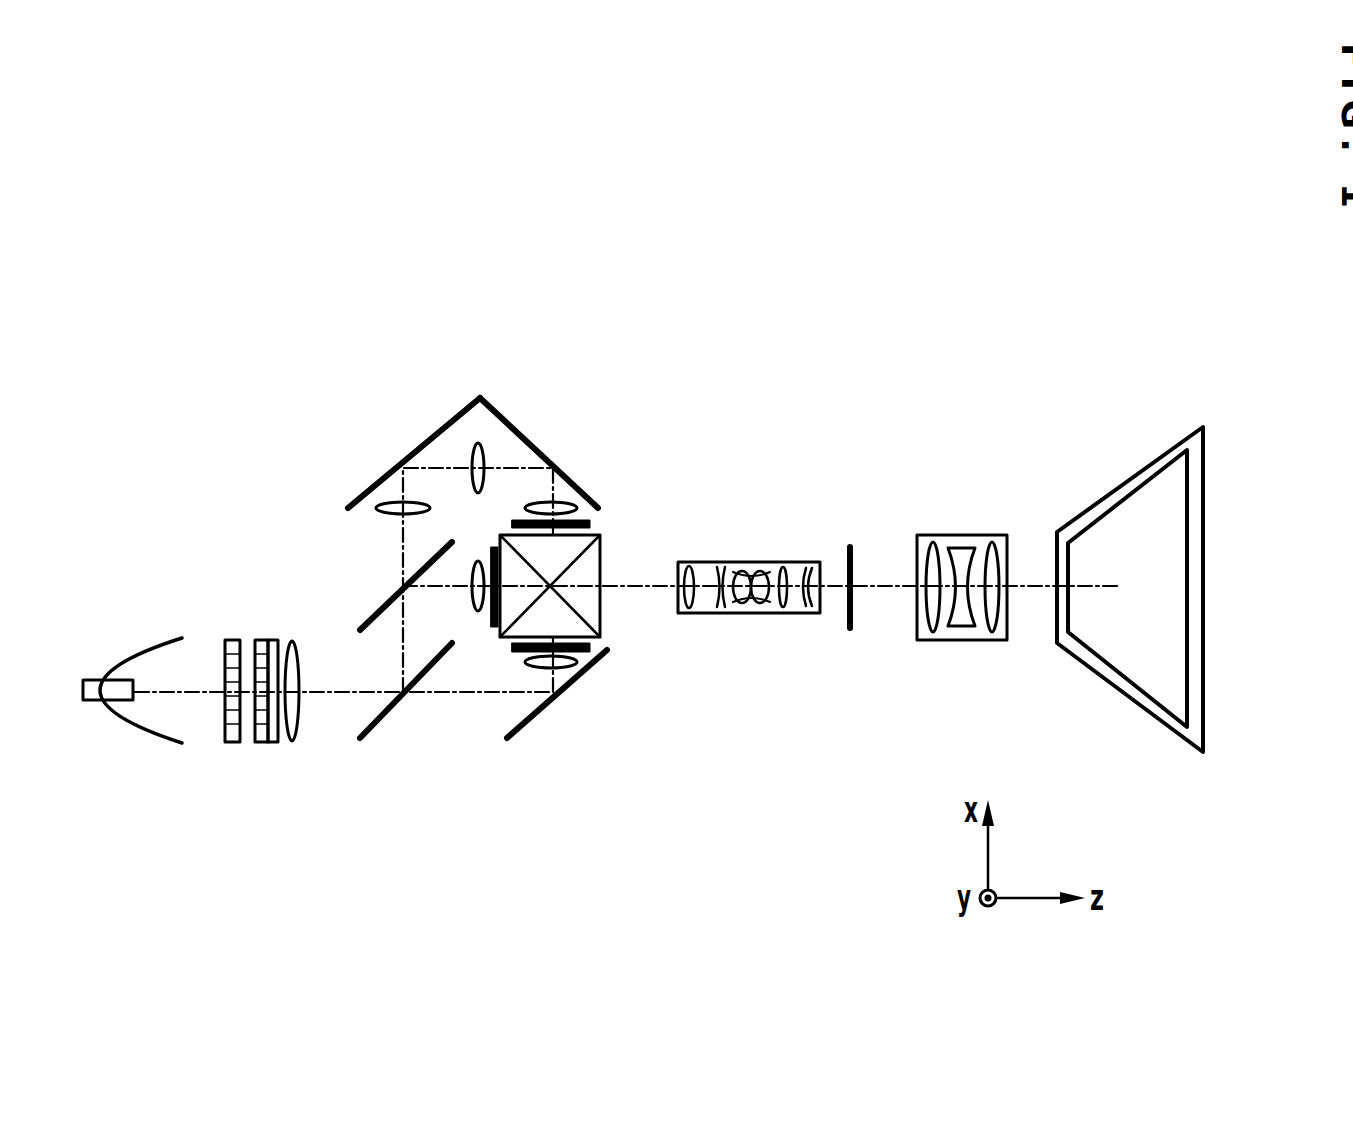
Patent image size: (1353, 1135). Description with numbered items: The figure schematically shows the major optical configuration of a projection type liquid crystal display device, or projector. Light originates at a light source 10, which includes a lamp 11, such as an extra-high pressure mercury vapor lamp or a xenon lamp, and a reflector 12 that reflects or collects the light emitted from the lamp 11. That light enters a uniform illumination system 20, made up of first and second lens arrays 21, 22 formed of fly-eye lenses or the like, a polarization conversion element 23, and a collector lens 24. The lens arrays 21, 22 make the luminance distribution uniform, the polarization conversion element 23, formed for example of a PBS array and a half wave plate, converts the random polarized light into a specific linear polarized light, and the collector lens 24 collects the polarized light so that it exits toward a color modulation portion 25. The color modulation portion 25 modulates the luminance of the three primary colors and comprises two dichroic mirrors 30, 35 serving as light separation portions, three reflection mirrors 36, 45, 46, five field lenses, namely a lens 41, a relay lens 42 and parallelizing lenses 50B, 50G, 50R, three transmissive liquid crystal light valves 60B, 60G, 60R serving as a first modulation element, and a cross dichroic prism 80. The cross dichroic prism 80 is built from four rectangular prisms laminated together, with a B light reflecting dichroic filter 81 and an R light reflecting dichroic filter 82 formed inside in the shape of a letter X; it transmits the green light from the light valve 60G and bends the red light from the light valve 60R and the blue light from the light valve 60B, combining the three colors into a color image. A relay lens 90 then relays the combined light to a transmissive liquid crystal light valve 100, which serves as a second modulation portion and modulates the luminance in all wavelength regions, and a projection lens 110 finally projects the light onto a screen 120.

The light source 10 is at (131, 764).
The lamp 11 is at (92, 688).
The reflector 12 is at (150, 740).
The uniform illumination system 20 is at (268, 789).
The first lens array 21 is at (230, 744).
The second lens array 22 is at (263, 744).
The polarization conversion element 23 is at (273, 744).
The collector lens 24 is at (319, 726).
The color modulation portion 25 is at (451, 627).
The dichroic mirror 30 is at (385, 718).
The dichroic mirror 35 is at (370, 622).
The reflection mirror 36 is at (527, 730).
The lens 41 is at (408, 503).
The relay lens 42 is at (480, 443).
The reflection mirror 45 is at (415, 442).
The reflection mirror 46 is at (527, 437).
The parallelizing lens 50R is at (560, 680).
The parallelizing lens 50G is at (476, 593).
The parallelizing lens 50B is at (573, 492).
The transmissive liquid crystal light valve 60R is at (588, 652).
The transmissive liquid crystal light valve 60G is at (492, 550).
The transmissive liquid crystal light valve 60B is at (597, 517).
The cross dichroic prism 80 is at (587, 579).
The B light reflecting dichroic filter 81 is at (532, 555).
The R light reflecting dichroic filter 82 is at (535, 612).
The relay lens 90 is at (750, 614).
The transmissive liquid crystal light valve 100 is at (850, 628).
The projection lens 110 is at (960, 535).
The screen 120 is at (1193, 625).